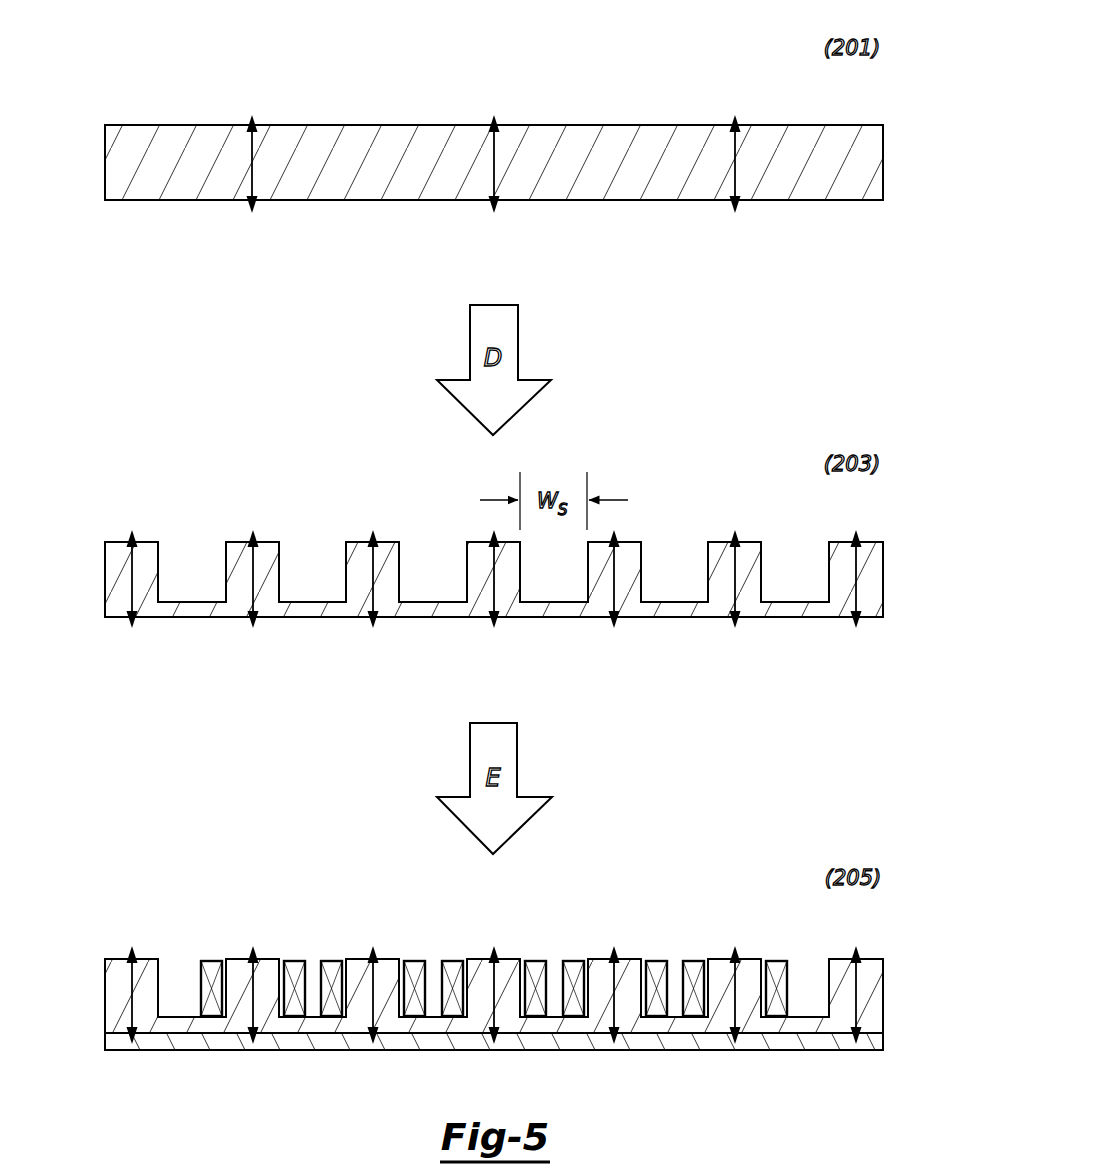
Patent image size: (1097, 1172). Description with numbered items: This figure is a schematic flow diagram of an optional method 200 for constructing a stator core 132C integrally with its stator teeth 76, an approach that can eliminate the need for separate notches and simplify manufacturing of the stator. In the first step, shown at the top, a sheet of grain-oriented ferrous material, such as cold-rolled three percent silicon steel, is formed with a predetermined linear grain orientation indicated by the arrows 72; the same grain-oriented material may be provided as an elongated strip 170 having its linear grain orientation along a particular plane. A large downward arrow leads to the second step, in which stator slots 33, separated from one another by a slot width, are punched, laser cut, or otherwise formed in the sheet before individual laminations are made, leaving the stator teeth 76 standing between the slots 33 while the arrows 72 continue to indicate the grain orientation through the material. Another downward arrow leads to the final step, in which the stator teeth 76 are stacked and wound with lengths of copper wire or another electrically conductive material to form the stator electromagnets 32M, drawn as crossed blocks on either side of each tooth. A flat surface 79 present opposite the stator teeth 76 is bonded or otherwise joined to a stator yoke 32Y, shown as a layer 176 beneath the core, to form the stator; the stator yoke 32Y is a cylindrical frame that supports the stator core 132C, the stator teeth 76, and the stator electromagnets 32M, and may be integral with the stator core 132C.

The method 200 is at (225, 52).
The elongated strip 170 is at (345, 158).
The arrows 72 is at (252, 163).
The stator teeth 76 is at (145, 542).
The stator slots 33 is at (435, 553).
The stator core 132C is at (691, 519).
The stator electromagnets 32M is at (212, 960).
The flat surface 79 is at (104, 1033).
The backing layer 176 is at (175, 1035).
The stator yoke 32Y is at (883, 1042).